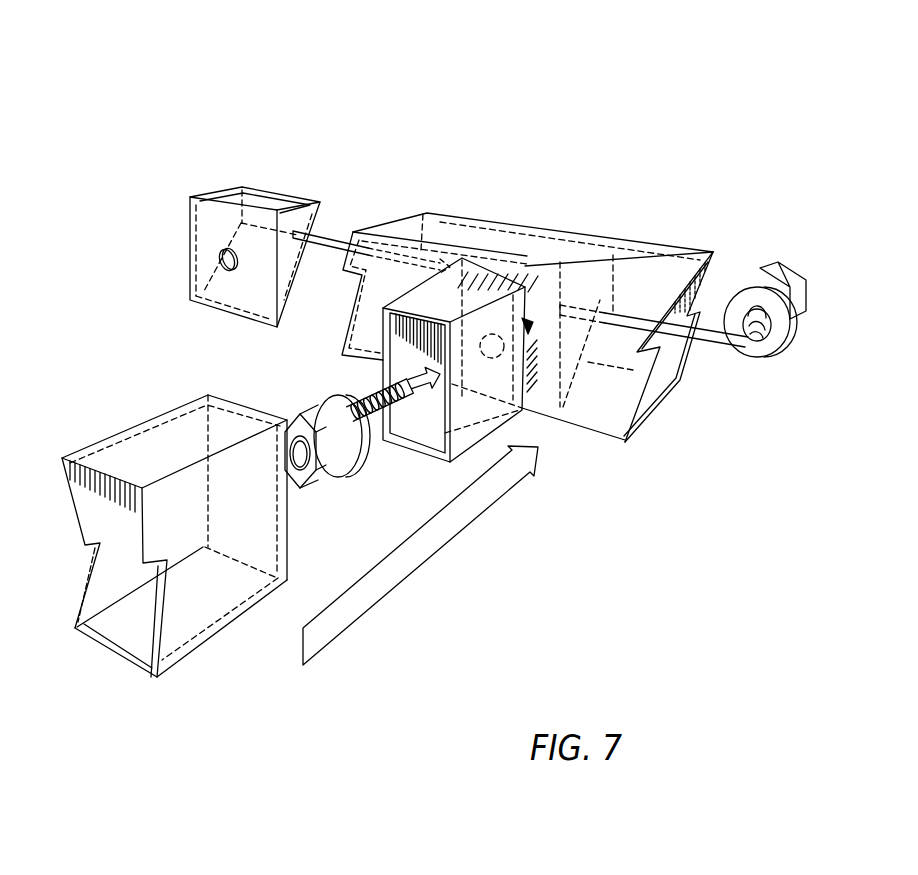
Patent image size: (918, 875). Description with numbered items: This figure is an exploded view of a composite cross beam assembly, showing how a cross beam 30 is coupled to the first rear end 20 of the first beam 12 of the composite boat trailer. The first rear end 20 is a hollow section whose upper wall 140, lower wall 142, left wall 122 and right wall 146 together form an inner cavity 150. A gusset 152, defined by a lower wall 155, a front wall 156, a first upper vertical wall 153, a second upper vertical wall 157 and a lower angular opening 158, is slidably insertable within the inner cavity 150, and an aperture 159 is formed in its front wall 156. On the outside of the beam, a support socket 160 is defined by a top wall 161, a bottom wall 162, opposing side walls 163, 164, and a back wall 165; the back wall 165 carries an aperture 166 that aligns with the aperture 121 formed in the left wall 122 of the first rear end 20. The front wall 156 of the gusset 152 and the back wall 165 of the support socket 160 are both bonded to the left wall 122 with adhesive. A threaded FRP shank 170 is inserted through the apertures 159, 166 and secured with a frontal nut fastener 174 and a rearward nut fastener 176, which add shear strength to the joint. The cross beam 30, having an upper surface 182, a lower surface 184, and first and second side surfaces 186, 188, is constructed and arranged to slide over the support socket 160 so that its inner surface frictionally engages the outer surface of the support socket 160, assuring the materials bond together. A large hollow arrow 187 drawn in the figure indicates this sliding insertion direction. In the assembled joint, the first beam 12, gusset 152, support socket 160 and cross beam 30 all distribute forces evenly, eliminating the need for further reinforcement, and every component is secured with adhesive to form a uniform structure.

The first beam 12 is at (430, 233).
The first rear end 20 is at (595, 58).
The cross beam 30 is at (95, 390).
The aperture 121 is at (528, 323).
The left wall 122 is at (590, 390).
The upper wall 140 is at (632, 265).
The lower wall 142 is at (655, 392).
The right wall 146 is at (688, 350).
The inner cavity 150 is at (668, 360).
The gusset 152 is at (283, 175).
The first upper vertical wall 153 is at (189, 233).
The lower wall 155 is at (220, 294).
The front wall 156 is at (206, 273).
The second upper vertical wall 157 is at (305, 228).
The lower angular opening 158 is at (289, 261).
The aperture 159 is at (228, 254).
The support socket 160 is at (470, 462).
The top wall 161 is at (450, 300).
The bottom wall 162 is at (428, 438).
The side wall 163 is at (413, 337).
The side wall 164 is at (478, 405).
The back wall 165 is at (515, 345).
The aperture 166 is at (497, 360).
The threaded FRP shank 170 is at (373, 392).
The frontal nut fastener 174 is at (303, 448).
The rearward nut fastener 176 is at (787, 285).
The upper surface 182 is at (113, 455).
The lower surface 184 is at (133, 622).
The first side surface 186 is at (242, 538).
The insertion direction arrow 187 is at (287, 537).
The second side surface 188 is at (128, 548).